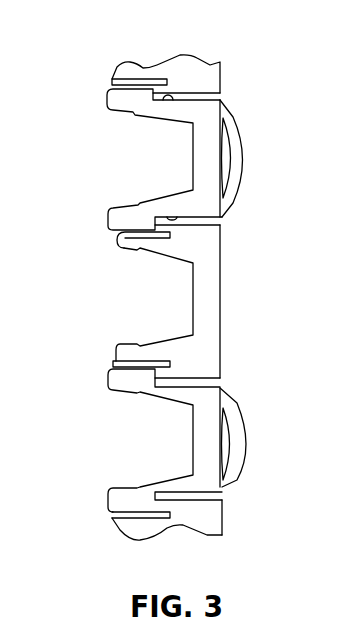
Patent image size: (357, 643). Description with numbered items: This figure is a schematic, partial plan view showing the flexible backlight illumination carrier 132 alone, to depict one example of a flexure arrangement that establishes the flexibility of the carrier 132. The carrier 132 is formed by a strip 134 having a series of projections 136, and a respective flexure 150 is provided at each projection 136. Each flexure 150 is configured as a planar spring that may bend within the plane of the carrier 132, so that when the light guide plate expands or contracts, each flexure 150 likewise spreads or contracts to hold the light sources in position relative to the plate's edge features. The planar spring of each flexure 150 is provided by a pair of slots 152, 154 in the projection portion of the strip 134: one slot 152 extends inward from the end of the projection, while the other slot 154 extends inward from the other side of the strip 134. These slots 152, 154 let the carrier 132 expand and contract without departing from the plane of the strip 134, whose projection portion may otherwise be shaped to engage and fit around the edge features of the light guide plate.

The carrier 132 is at (213, 50).
The strip 134 is at (220, 290).
The projection 136 is at (106, 93).
The flexure 150 is at (184, 86).
The slot 152 is at (125, 80).
The slot 154 is at (169, 101).